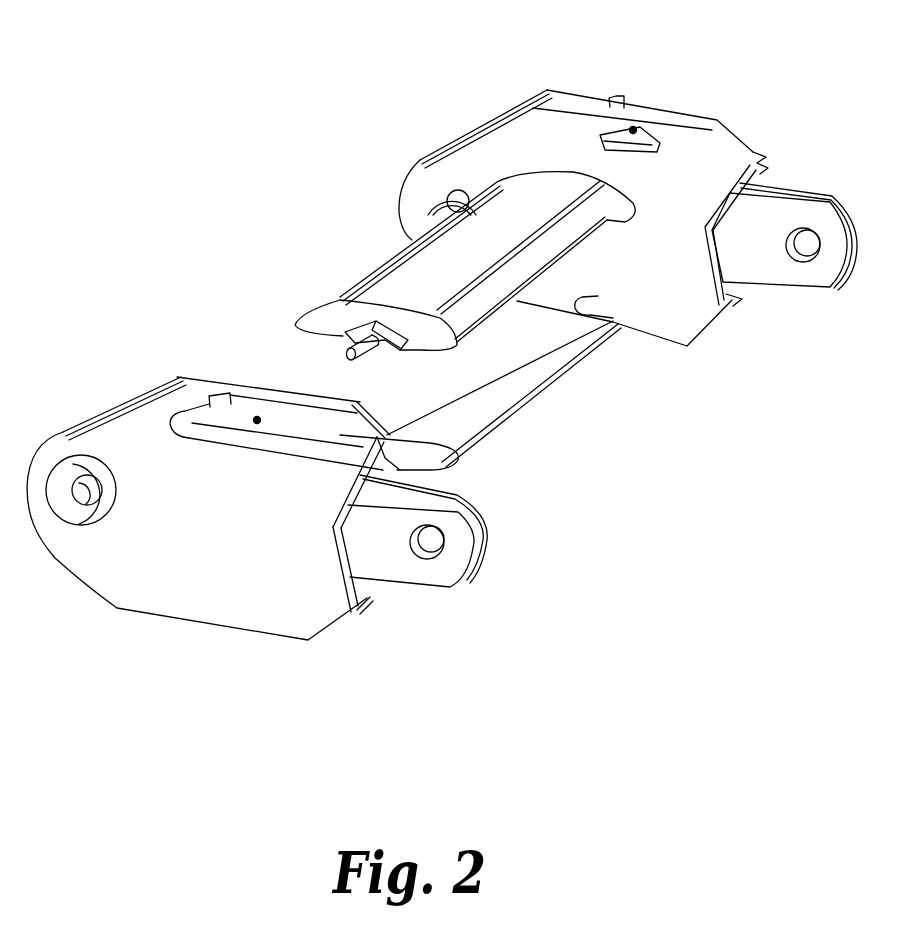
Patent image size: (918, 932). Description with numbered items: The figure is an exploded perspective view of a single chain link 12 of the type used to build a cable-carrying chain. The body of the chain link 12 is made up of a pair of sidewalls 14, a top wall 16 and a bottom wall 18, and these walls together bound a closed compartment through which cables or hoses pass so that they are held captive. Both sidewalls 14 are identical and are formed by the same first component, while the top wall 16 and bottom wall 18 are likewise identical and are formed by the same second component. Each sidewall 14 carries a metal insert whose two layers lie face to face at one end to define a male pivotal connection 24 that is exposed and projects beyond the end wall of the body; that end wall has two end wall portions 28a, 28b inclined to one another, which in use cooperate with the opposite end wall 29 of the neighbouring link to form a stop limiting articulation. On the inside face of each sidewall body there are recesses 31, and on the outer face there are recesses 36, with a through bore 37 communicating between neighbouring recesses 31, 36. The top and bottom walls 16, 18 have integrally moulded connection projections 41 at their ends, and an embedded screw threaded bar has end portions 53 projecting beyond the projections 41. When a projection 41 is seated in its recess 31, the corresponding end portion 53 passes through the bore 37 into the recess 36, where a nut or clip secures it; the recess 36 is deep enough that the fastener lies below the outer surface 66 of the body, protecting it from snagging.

The chain link 12 is at (296, 218).
The sidewall 14 is at (498, 104).
The top wall 16 is at (432, 257).
The bottom wall 18 is at (496, 388).
The male pivotal connection 24 is at (778, 266).
The end wall portion 28a is at (766, 170).
The end wall portion 28b is at (738, 312).
The opposite end wall 29 is at (458, 140).
The recess 31 is at (655, 140).
The recess 36 is at (758, 158).
The through bore 37 is at (634, 130).
The connection projection 41 is at (360, 328).
The end portion 53 is at (346, 351).
The outer surface 66 is at (242, 495).